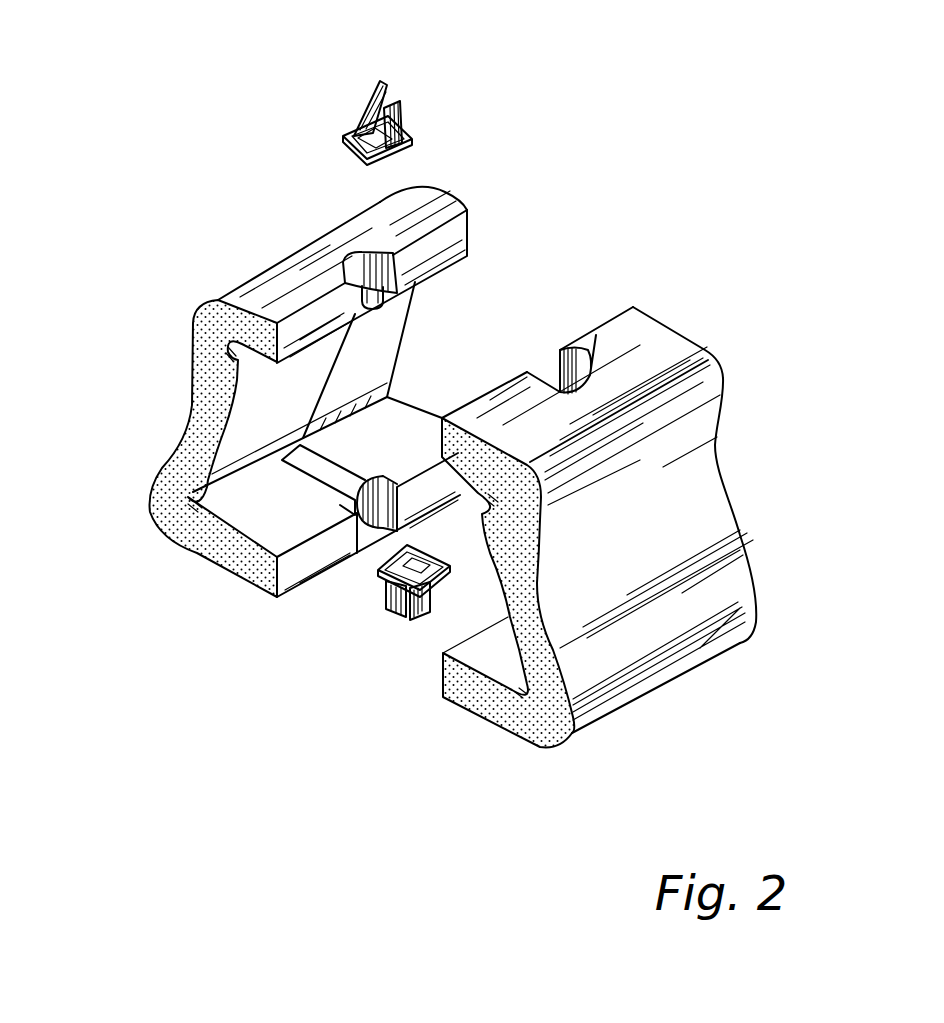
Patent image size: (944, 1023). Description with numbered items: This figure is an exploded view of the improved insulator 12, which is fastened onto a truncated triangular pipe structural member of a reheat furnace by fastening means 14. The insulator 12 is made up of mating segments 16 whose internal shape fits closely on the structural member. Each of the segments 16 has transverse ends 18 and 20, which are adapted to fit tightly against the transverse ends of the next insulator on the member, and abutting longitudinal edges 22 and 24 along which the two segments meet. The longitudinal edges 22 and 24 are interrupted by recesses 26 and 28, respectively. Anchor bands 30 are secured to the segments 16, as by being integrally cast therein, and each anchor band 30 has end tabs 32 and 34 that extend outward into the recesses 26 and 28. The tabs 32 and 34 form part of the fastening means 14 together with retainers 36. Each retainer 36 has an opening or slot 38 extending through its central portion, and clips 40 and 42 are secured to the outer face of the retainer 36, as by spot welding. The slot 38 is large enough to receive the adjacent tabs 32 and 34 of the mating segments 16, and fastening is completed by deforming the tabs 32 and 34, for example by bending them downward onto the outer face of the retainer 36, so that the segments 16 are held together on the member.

The improved insulator 12 is at (162, 166).
The fastening means 14 is at (430, 83).
The mating segments 16 is at (152, 512).
The transverse end 18 is at (340, 363).
The transverse end 20 is at (400, 205).
The abutting longitudinal edge 22 is at (470, 255).
The abutting longitudinal edge 24 is at (310, 572).
The recess 26 is at (468, 208).
The recess 28 is at (390, 525).
The anchor band 30 is at (350, 143).
The end tab 32 is at (347, 262).
The end tab 34 is at (358, 522).
The retainer 36 is at (398, 540).
The slot 38 is at (363, 157).
The clip 40 is at (365, 93).
The clip 42 is at (413, 117).